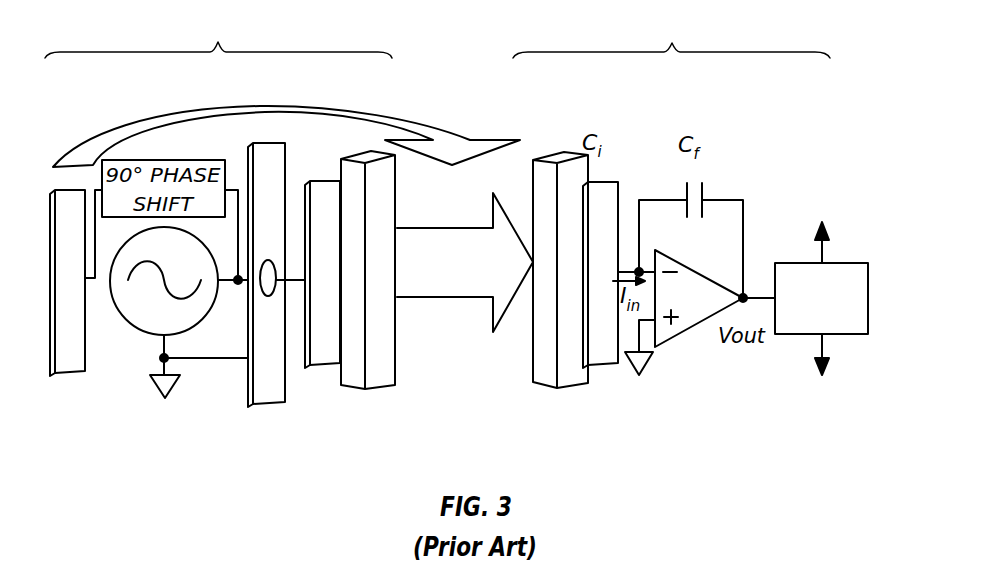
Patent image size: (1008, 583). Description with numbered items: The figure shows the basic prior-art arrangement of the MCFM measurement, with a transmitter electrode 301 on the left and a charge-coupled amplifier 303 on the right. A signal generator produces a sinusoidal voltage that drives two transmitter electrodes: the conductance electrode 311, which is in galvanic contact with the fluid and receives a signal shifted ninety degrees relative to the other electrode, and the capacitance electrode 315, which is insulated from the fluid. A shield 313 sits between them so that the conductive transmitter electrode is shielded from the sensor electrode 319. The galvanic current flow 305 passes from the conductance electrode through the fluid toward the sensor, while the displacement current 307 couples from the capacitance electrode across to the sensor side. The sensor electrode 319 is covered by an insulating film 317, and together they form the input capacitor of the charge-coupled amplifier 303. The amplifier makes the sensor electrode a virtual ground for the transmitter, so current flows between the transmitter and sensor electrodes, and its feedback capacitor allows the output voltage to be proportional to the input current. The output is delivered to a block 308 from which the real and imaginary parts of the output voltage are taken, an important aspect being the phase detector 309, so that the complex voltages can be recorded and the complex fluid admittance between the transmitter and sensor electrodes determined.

The transmitter electrode 301 is at (218, 35).
The charge-coupled amplifier 303 is at (671, 35).
The galvanic current flow 305 is at (200, 107).
The displacement current 307 is at (473, 275).
The demodulator block 308 is at (762, 298).
The phase detector 309 is at (833, 301).
The conductance electrode 311 is at (62, 376).
The shield 313 is at (268, 407).
The capacitance electrode 315 is at (313, 368).
The film 317 is at (397, 353).
The sensor electrode 319 is at (603, 367).